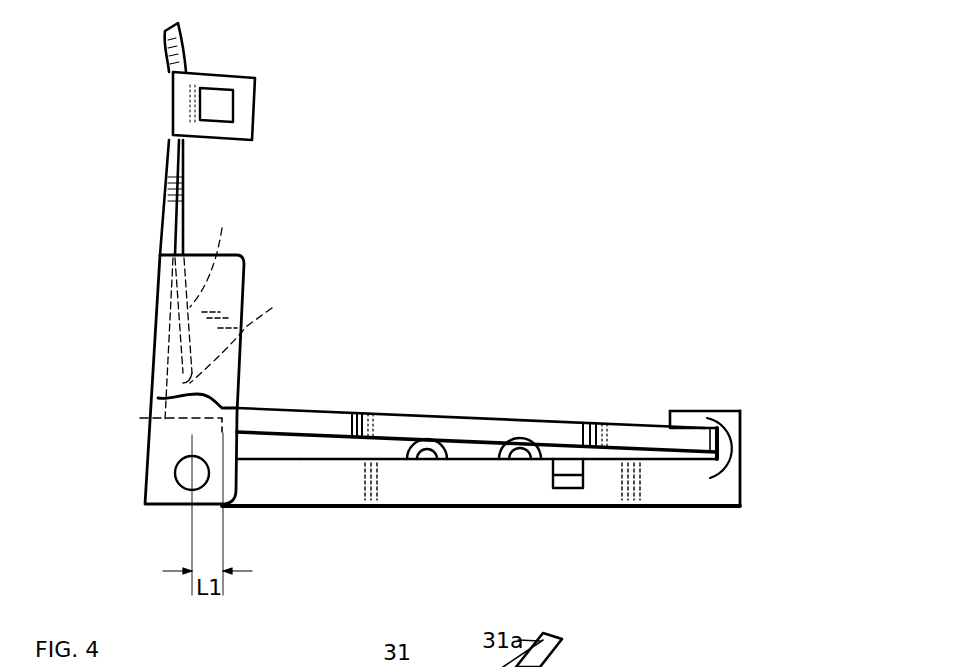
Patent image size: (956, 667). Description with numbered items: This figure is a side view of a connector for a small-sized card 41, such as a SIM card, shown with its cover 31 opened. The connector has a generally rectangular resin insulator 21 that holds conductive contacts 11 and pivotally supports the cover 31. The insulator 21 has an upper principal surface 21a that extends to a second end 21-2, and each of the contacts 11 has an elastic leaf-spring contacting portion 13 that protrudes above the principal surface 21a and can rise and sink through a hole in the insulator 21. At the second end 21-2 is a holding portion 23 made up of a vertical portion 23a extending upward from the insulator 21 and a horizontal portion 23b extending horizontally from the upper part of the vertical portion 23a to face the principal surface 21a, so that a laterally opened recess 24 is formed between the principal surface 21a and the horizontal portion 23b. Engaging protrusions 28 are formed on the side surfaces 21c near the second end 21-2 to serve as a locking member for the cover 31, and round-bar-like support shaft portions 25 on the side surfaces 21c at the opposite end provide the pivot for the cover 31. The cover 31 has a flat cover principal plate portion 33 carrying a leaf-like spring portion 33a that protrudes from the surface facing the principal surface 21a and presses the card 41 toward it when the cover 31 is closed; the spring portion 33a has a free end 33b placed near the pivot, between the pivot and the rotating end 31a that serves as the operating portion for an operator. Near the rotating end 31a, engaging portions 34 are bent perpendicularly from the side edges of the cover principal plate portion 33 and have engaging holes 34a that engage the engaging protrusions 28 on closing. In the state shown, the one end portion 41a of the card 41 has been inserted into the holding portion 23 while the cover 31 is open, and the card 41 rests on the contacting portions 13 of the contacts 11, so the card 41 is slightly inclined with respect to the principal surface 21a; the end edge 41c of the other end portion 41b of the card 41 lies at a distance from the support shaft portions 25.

The conductive contacts 11 is at (470, 406).
The contacting portion 13 is at (433, 440).
The insulator 21 is at (430, 509).
The principal surface 21a is at (262, 457).
The side surfaces 21c is at (495, 487).
The second end 21-2 is at (727, 492).
The holding portion 23 is at (741, 420).
The vertical portion 23a is at (730, 446).
The horizontal portion 23b is at (703, 411).
The recess 24 is at (740, 412).
The support shaft portions 25 is at (177, 450).
The engaging protrusions 28 is at (578, 467).
The cover 31 is at (166, 163).
The rotating end 31a is at (188, 42).
The cover principal plate portion 33 is at (166, 200).
The spring portion 33a is at (220, 256).
The free end 33b is at (253, 341).
The engaging portions 34 is at (252, 92).
The engaging holes 34a is at (223, 105).
The card 41 is at (575, 420).
The one end portion 41a is at (728, 473).
The other end portion 41b is at (140, 418).
The end edge 41c is at (158, 398).